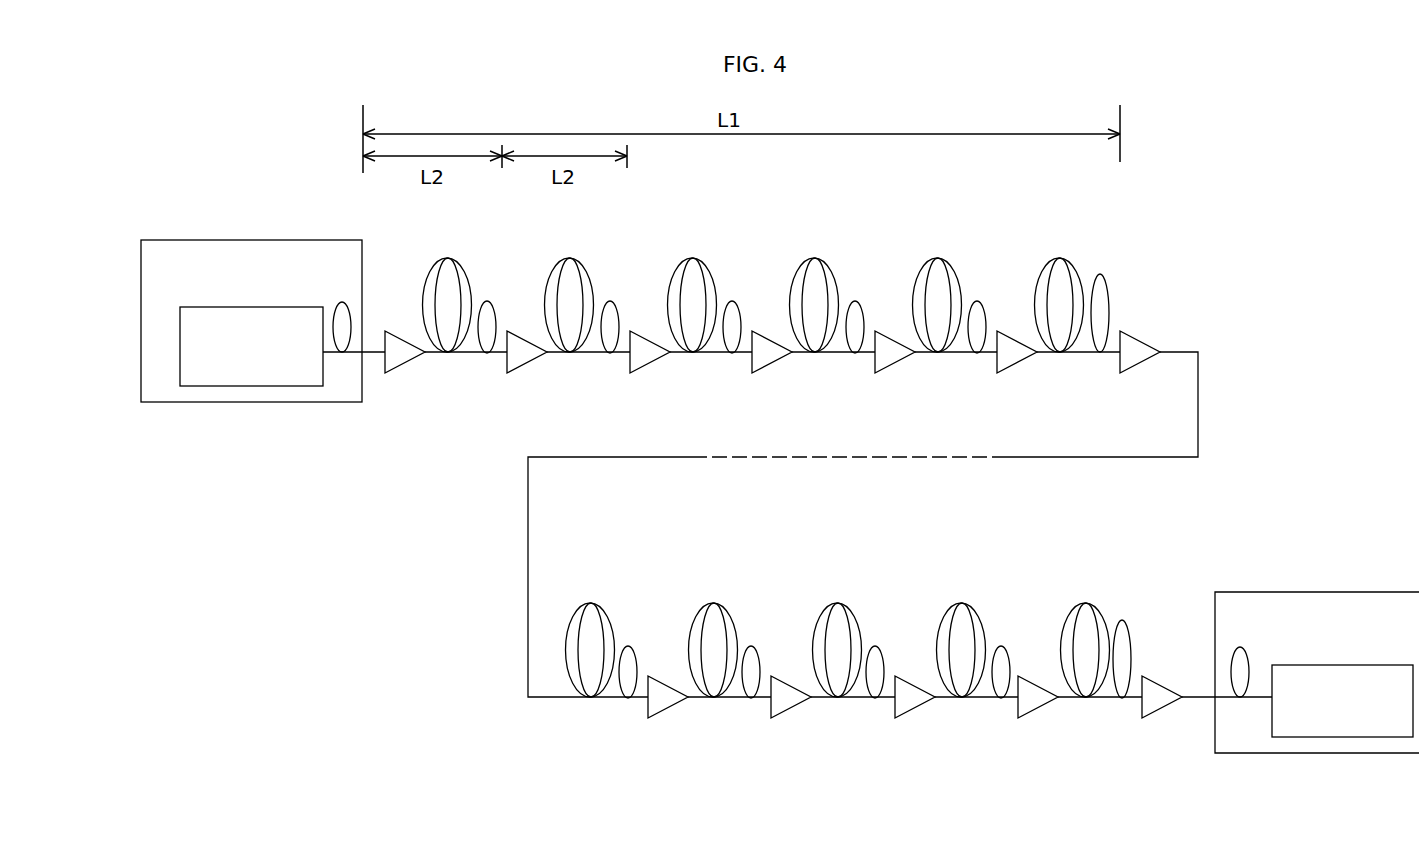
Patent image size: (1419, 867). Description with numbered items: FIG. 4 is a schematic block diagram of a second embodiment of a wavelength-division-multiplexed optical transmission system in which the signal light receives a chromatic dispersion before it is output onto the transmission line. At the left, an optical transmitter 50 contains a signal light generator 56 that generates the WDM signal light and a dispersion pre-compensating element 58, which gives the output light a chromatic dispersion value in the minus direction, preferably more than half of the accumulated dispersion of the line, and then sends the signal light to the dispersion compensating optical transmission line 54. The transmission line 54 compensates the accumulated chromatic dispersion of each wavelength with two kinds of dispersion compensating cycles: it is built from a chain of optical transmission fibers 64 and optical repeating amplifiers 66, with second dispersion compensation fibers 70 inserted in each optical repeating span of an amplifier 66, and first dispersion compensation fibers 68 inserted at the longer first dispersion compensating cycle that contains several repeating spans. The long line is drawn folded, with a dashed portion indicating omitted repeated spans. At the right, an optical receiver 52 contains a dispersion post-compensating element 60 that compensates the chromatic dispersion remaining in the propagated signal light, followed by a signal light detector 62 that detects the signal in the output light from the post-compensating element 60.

The optical transmitter 50 is at (250, 247).
The optical receiver 52 is at (1320, 600).
The dispersion compensating optical transmission line 54 is at (1228, 345).
The signal light generator 56 is at (247, 384).
The dispersion pre-compensating element 58 is at (345, 312).
The dispersion post-compensating element 60 is at (1232, 673).
The signal light detector 62 is at (1322, 739).
The optical transmission fiber 64 is at (449, 258).
The optical repeating amplifier 66 is at (398, 365).
The first dispersion compensation fiber 68 is at (1103, 285).
The second dispersion compensation fiber 70 is at (489, 302).